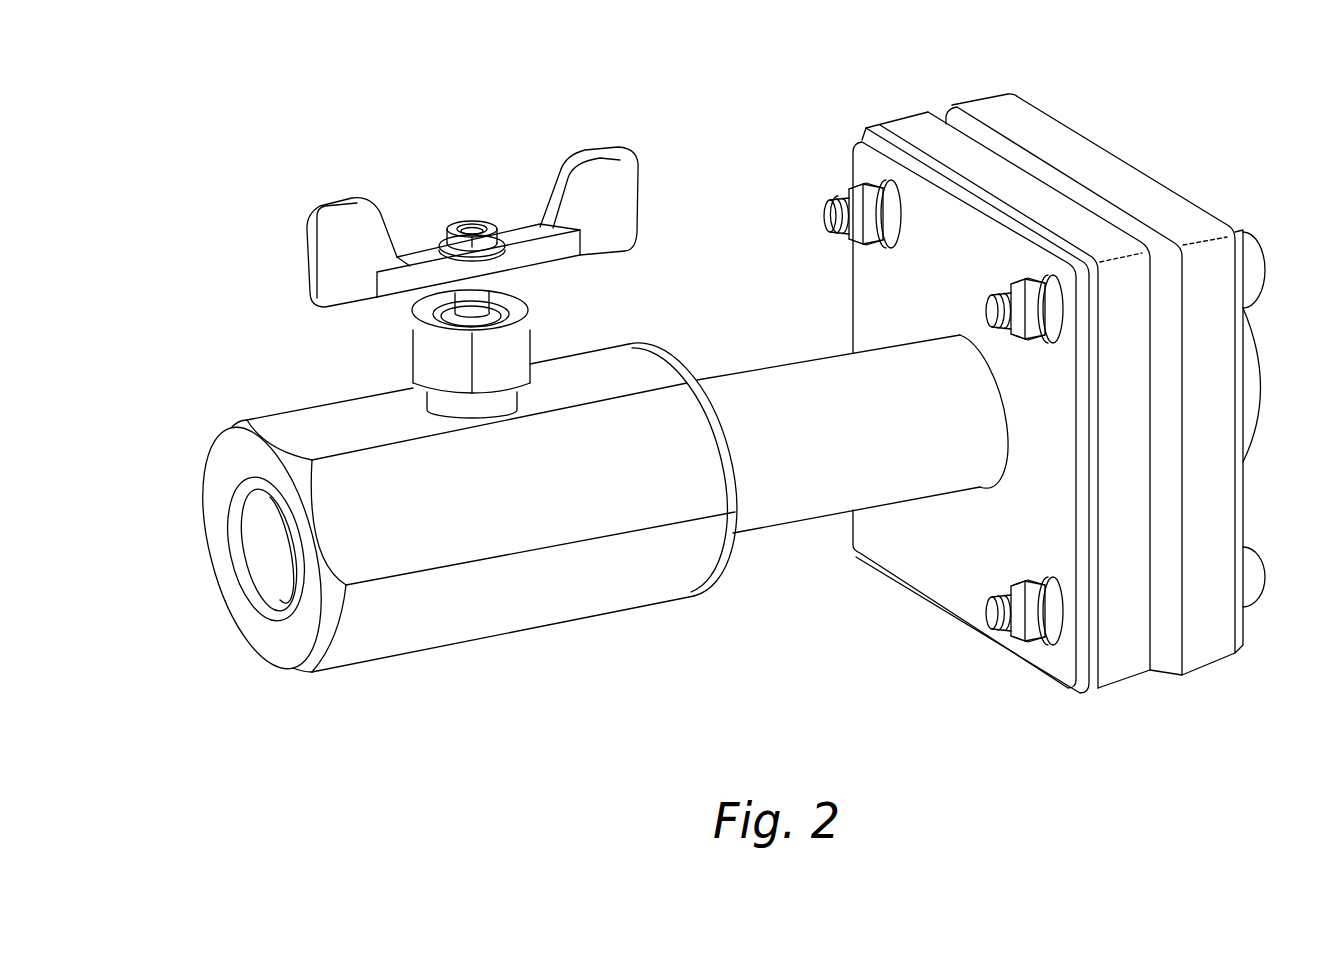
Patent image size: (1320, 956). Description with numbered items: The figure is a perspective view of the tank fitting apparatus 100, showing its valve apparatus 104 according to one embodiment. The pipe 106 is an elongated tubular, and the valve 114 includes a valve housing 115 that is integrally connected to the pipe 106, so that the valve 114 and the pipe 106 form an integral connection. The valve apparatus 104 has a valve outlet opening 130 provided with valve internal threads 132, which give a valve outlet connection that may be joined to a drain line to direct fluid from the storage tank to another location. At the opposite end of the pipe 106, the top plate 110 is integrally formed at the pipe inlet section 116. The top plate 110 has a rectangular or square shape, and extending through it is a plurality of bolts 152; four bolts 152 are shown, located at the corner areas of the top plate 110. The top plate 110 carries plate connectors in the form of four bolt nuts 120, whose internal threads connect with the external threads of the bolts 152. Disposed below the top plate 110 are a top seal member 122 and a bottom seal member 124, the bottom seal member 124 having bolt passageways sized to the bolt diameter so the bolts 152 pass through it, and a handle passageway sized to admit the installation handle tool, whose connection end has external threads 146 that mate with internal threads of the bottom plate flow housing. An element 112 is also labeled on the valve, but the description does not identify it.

The tank fitting apparatus 100 is at (213, 85).
The valve apparatus 104 is at (228, 338).
The pipe 106 is at (748, 378).
The top plate 110 is at (853, 300).
The handle 112 is at (338, 205).
The valve 114 is at (455, 640).
The valve housing 115 is at (692, 582).
The pipe inlet section 116 is at (1002, 433).
The bolt nuts 120 is at (845, 205).
The top seal member 122 is at (897, 117).
The bottom seal member 124 is at (983, 100).
The valve outlet opening 130 is at (252, 538).
The valve internal threads 132 is at (262, 584).
The external threads 146 is at (835, 230).
The bolts 152 is at (838, 222).